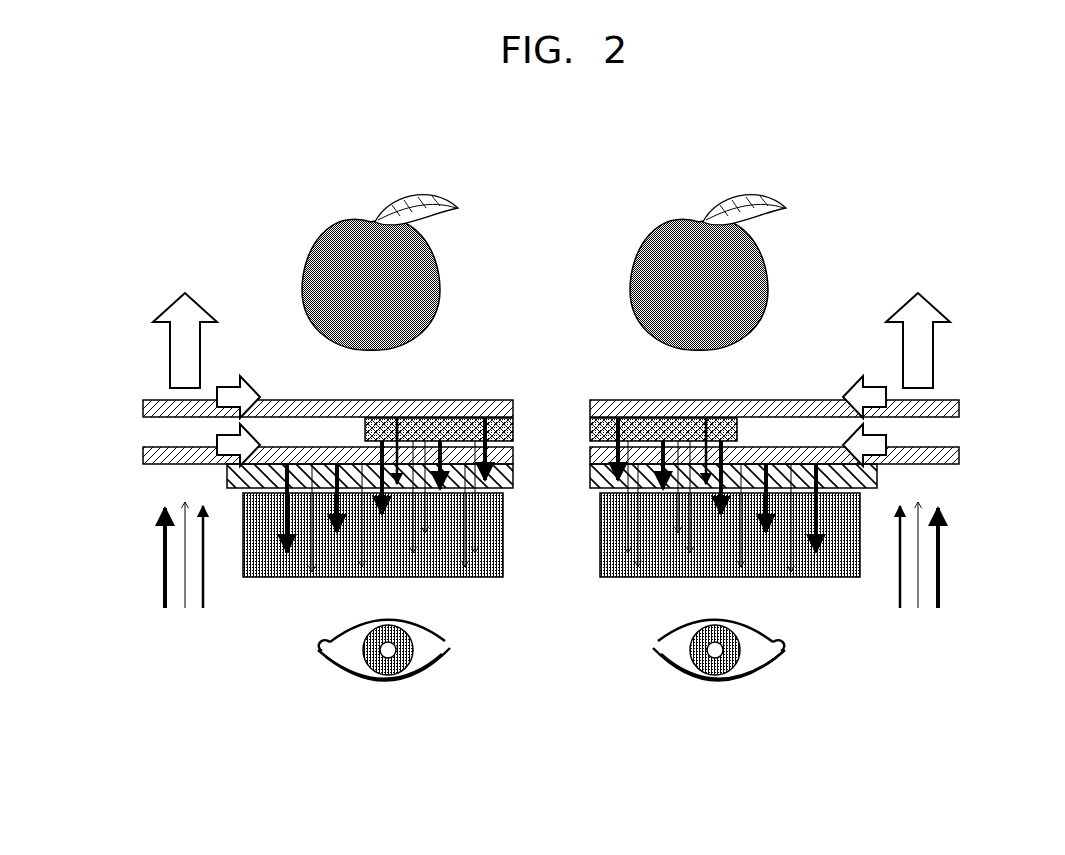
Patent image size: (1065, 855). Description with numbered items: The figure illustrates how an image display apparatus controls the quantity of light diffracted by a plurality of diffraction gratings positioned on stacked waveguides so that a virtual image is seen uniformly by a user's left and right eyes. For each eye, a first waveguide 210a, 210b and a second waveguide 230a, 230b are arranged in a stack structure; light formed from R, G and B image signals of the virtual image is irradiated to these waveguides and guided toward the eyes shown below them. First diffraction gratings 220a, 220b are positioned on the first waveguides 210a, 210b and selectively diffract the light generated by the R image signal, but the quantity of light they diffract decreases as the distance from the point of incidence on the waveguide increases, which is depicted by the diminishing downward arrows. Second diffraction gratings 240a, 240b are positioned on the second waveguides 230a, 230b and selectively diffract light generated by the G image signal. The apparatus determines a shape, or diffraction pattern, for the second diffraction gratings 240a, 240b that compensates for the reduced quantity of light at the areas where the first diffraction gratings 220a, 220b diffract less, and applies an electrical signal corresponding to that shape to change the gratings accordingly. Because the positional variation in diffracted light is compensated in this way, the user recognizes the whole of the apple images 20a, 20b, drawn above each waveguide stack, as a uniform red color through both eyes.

The apple image 20a is at (407, 190).
The apple image 20b is at (735, 190).
The second waveguide 230a is at (143, 407).
The second waveguide 230b is at (959, 407).
The first waveguide 210a is at (143, 453).
The first waveguide 210b is at (959, 453).
The first diffraction grating 220a is at (227, 477).
The first diffraction grating 220b is at (877, 477).
The second diffraction grating 240a is at (365, 430).
The second diffraction grating 240b is at (737, 430).